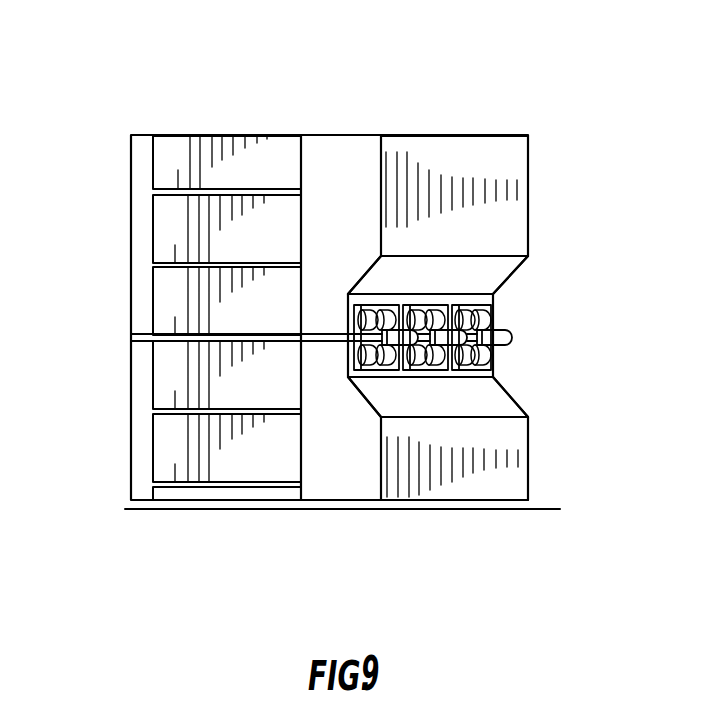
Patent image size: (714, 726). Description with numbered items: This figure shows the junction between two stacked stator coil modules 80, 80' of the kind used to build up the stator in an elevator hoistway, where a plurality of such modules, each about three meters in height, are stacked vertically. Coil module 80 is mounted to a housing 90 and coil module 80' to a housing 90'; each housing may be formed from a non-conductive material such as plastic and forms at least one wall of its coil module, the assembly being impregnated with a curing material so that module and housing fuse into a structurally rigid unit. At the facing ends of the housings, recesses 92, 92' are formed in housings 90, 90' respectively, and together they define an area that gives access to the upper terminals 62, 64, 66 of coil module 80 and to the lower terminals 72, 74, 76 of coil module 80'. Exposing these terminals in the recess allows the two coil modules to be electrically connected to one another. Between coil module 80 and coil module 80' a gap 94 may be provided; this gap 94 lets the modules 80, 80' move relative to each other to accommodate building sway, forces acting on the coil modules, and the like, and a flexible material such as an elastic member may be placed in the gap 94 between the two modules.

The coil module 80 is at (227, 267).
The coil module 80' is at (227, 534).
The housing 90 is at (454, 137).
The housing 90' is at (443, 509).
The recess 92 is at (502, 252).
The recess 92' is at (492, 385).
The terminal 62 is at (377, 310).
The terminal 64 is at (441, 310).
The terminal 66 is at (493, 318).
The terminal 72 is at (370, 357).
The terminal 74 is at (427, 365).
The terminal 76 is at (493, 357).
The gap 94 is at (132, 334).